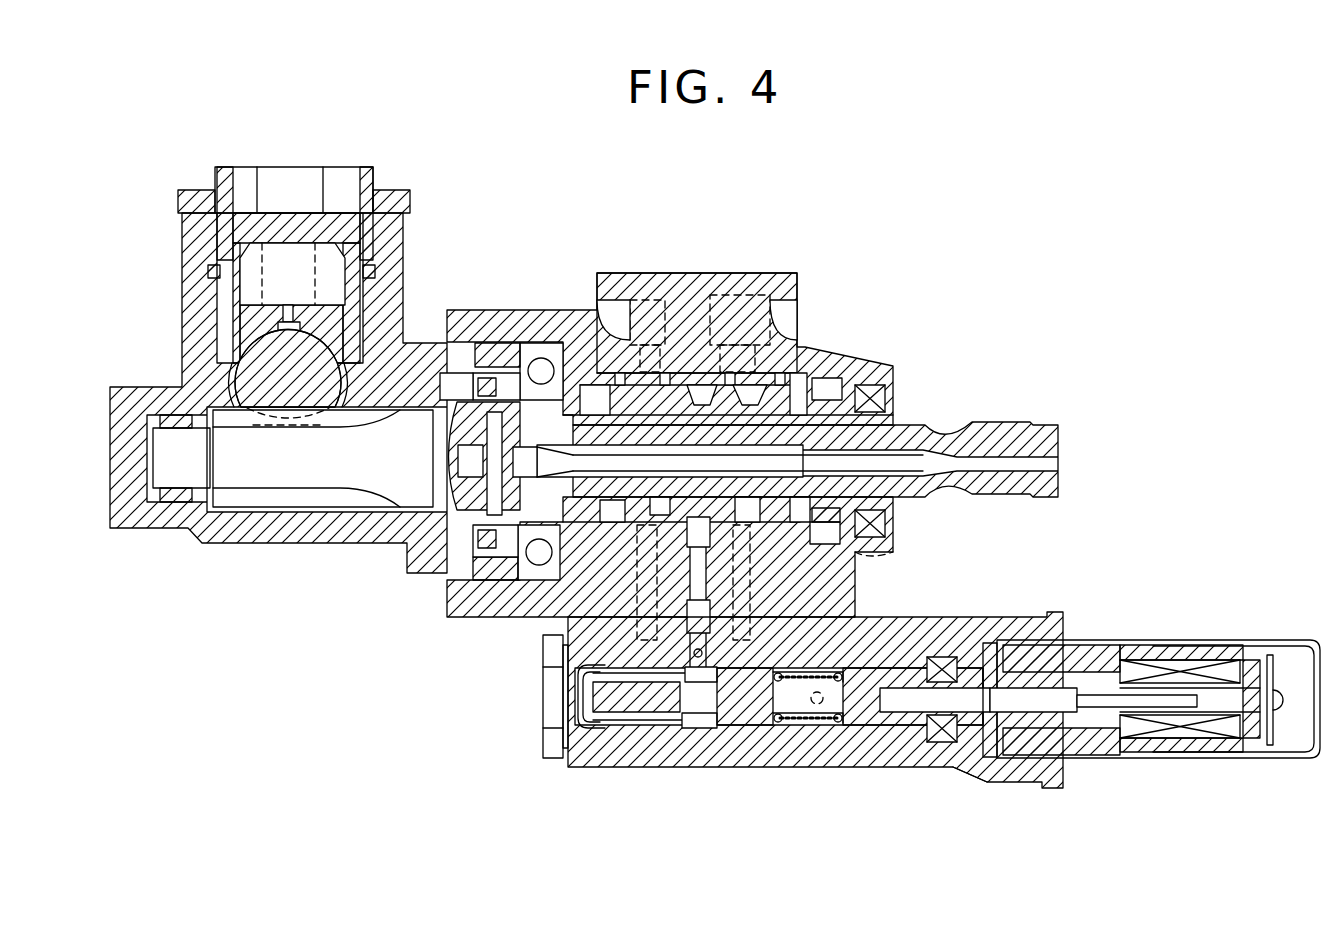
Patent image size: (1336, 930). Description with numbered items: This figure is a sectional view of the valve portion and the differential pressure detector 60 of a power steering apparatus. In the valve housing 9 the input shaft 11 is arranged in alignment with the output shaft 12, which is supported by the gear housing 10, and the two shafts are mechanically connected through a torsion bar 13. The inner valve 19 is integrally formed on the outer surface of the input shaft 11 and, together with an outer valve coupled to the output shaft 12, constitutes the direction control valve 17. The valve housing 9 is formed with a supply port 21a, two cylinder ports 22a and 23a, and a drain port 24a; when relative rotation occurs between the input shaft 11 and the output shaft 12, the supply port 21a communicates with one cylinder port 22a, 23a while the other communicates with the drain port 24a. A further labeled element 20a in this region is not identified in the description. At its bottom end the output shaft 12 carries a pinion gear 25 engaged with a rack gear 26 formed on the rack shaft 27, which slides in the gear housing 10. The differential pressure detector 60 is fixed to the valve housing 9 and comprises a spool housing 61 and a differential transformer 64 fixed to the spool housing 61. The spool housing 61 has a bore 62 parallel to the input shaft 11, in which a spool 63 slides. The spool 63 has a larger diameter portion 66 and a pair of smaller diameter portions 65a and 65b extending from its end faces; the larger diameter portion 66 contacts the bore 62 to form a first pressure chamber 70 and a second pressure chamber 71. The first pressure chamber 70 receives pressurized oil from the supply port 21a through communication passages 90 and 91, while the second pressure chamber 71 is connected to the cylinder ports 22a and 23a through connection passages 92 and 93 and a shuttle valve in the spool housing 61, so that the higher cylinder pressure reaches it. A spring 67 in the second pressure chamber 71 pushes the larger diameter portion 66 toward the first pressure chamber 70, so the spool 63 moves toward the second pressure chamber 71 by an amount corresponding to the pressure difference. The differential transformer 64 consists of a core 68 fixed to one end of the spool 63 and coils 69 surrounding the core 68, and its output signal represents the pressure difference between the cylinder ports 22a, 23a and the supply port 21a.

The valve housing 9 is at (563, 317).
The gear housing 10 is at (422, 550).
The input shaft 11 is at (976, 432).
The output shaft 12 is at (343, 477).
The torsion bar 13 is at (640, 553).
The direction control valve 17 is at (795, 350).
The inner valve 19 is at (697, 370).
The suction port 20a is at (600, 337).
The supply port 21a is at (677, 293).
The cylinder port 22a is at (630, 293).
The cylinder port 23a is at (793, 272).
The drain port 24a is at (808, 372).
The pinion gear 25 is at (243, 498).
The rack gear 26 is at (293, 418).
The rack shaft 27 is at (260, 350).
The differential pressure detector 60 is at (752, 739).
The spool housing 61 is at (618, 768).
The bore 62 is at (588, 765).
The spool 63 is at (707, 727).
The differential transformer 64 is at (1151, 753).
The smaller diameter portion 65a is at (937, 768).
The smaller diameter portion 65b is at (603, 700).
The larger diameter portion 66 is at (752, 763).
The spring 67 is at (877, 768).
The core 68 is at (1092, 697).
The coils 69 is at (1150, 728).
The first pressure chamber 70 is at (707, 697).
The second pressure chamber 71 is at (833, 768).
The communication passage 90 is at (790, 612).
The communication passage 91 is at (790, 647).
The connection passage 92 is at (855, 570).
The connection passage 93 is at (800, 610).